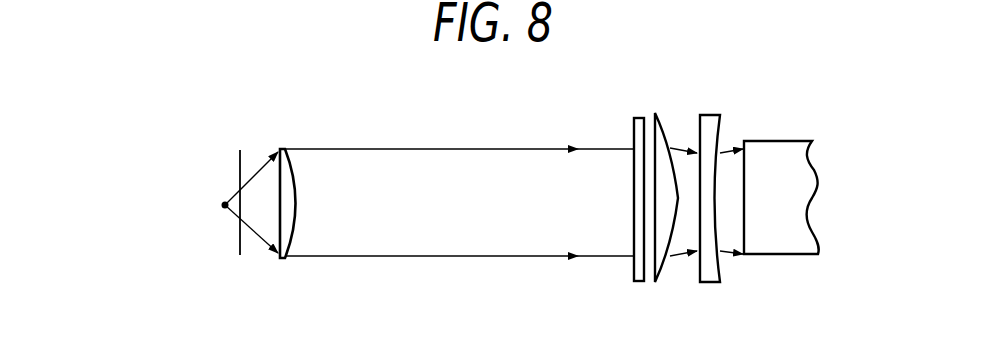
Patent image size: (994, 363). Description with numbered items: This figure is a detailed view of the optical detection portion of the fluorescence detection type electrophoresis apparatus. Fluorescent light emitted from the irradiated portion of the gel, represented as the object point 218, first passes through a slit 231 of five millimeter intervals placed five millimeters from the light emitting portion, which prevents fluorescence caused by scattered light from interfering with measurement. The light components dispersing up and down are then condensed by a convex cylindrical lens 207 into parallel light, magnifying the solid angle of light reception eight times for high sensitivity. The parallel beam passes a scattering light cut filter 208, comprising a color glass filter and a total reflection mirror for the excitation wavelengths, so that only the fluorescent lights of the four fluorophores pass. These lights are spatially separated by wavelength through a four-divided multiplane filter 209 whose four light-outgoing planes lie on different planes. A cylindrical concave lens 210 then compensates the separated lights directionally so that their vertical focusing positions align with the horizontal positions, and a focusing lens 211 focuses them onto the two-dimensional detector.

The object point 218 is at (225, 202).
The slit 231 is at (241, 164).
The convex cylindrical lens 207 is at (284, 153).
The scattering light cut filter 208 is at (639, 125).
The four-divided multiplane filter 209 is at (661, 137).
The cylindrical concave lens 210 is at (713, 120).
The focusing lens 211 is at (793, 153).